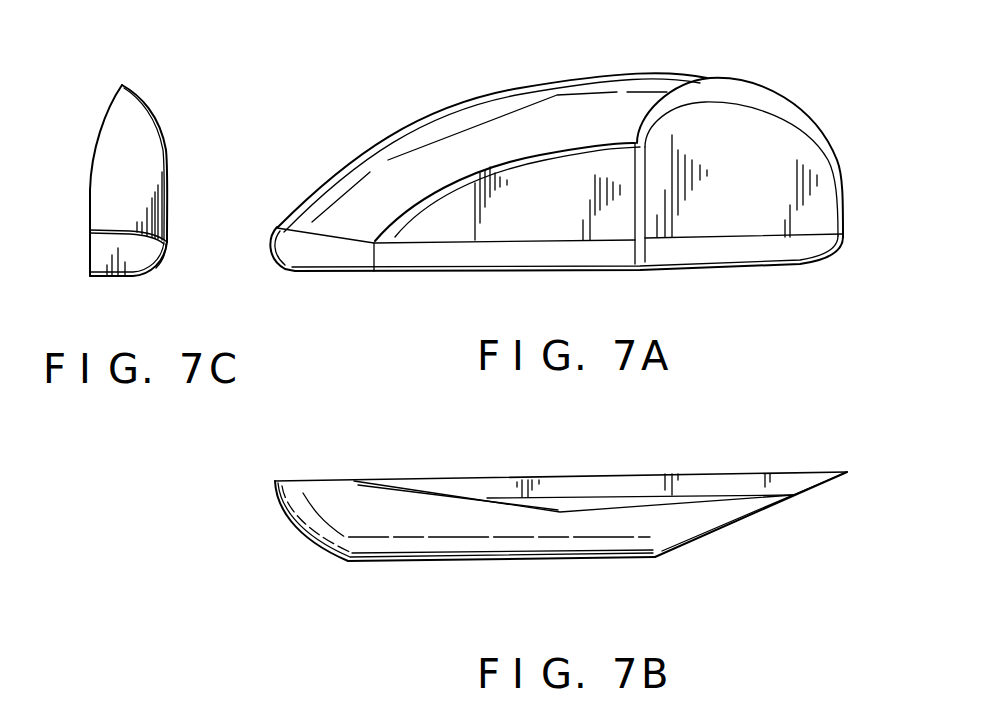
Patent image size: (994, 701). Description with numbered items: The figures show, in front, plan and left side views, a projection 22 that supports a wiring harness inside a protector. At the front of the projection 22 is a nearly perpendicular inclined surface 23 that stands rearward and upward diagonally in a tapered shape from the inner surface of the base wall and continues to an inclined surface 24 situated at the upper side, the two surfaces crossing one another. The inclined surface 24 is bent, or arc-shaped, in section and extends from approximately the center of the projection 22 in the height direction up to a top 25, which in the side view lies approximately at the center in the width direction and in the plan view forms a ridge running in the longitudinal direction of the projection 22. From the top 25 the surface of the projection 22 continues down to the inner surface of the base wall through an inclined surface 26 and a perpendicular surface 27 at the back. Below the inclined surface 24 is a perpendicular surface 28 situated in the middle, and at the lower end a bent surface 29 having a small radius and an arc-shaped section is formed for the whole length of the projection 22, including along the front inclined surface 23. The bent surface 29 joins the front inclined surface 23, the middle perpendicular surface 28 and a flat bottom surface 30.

In FIG. 7A, the projection 22 is at (382, 49).
In FIG. 7B, the projection 22 is at (415, 434).
In FIG. 7C, the projection 22 is at (205, 57).
In FIG. 7A, the inclined surface (first inclined surface) 23 is at (753, 130).
In FIG. 7B, the inclined surface (first inclined surface) 23 is at (723, 523).
In FIG. 7A, the inclined surface (second inclined surface) 24 is at (493, 115).
In FIG. 7B, the inclined surface (second inclined surface) 24 is at (442, 535).
In FIG. 7C, the inclined surface (second inclined surface) 24 is at (147, 102).
In FIG. 7A, the top 25 is at (590, 72).
In FIG. 7B, the top 25 is at (560, 500).
In FIG. 7C, the top 25 is at (122, 85).
In FIG. 7B, the inclined surface 26 is at (630, 485).
In FIG. 7C, the inclined surface 26 is at (105, 120).
In FIG. 7B, the perpendicular surface 27 is at (698, 472).
In FIG. 7C, the perpendicular surface 27 is at (90, 200).
In FIG. 7A, the perpendicular surface 28 is at (497, 222).
In FIG. 7B, the perpendicular surface 28 is at (532, 558).
In FIG. 7C, the perpendicular surface 28 is at (168, 198).
In FIG. 7A, the bent surface 29 is at (620, 253).
In FIG. 7C, the bent surface 29 is at (168, 257).
In FIG. 7A, the flat bottom surface 30 is at (572, 268).
In FIG. 7C, the flat bottom surface 30 is at (115, 278).